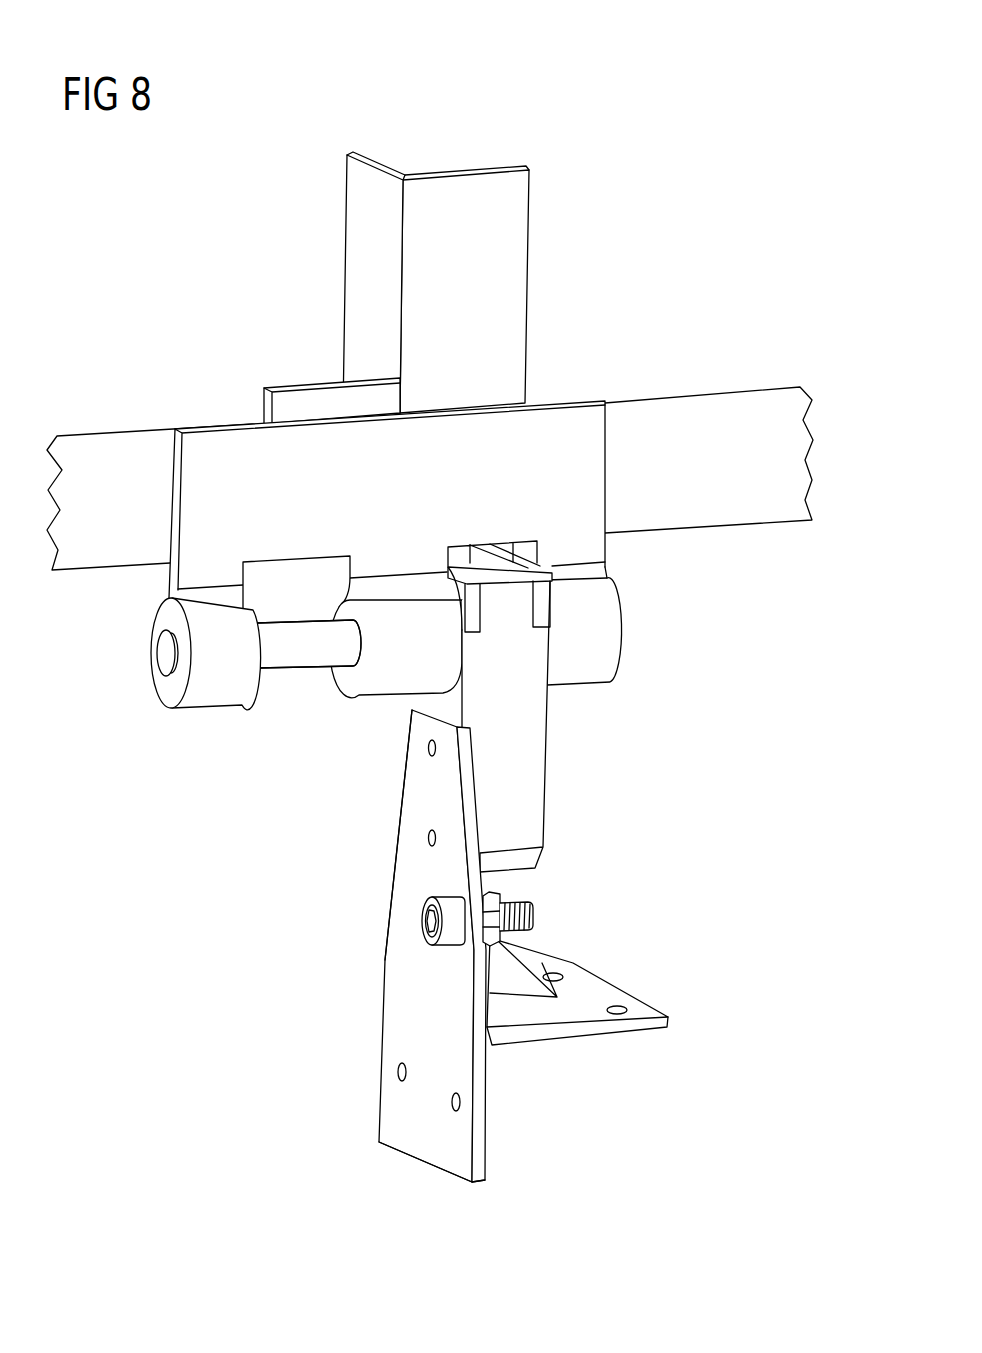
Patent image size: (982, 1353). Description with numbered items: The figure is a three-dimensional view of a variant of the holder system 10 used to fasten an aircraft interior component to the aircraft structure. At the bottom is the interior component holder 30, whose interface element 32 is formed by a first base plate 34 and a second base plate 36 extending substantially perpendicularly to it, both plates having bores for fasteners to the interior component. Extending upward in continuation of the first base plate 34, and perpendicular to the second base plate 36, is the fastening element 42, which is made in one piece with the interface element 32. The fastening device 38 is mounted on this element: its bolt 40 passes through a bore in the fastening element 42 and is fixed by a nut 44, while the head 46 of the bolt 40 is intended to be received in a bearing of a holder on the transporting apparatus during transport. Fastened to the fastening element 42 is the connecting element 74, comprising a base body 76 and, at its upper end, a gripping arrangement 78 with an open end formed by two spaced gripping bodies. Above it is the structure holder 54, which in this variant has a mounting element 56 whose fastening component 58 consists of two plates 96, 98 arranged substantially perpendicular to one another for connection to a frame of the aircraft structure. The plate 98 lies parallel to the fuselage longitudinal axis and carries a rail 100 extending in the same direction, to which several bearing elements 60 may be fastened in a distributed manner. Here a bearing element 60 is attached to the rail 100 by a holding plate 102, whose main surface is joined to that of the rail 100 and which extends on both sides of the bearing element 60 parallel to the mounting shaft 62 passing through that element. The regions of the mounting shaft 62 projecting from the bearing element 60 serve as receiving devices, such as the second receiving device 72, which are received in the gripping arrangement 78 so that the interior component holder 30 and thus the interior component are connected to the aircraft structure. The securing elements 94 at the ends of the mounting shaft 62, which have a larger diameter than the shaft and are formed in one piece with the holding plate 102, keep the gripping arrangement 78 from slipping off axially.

The holder system 10 is at (746, 154).
The interior component holder 30 is at (465, 951).
The interface element 32 is at (528, 1084).
The first base plate 34 is at (425, 1150).
The second base plate 36 is at (603, 993).
The fastening device 38 is at (520, 914).
The bolt 40 is at (533, 919).
The fastening element 42 is at (400, 930).
The nut 44 is at (481, 931).
The head 46 is at (446, 902).
The structure holder 54 is at (458, 288).
The mounting element 56 is at (436, 444).
The fastening component 58 is at (430, 288).
The bearing element 60 is at (388, 685).
The mounting shaft 62 is at (287, 637).
The second receiving device 72 is at (293, 672).
The connecting element 74 is at (549, 681).
The base body 76 is at (538, 770).
The gripping arrangement 78 is at (546, 555).
The securing elements 94 is at (213, 697).
The plate 96 is at (357, 203).
The plate 98 is at (522, 210).
The rail 100 is at (708, 517).
The holding plate 102 is at (598, 466).